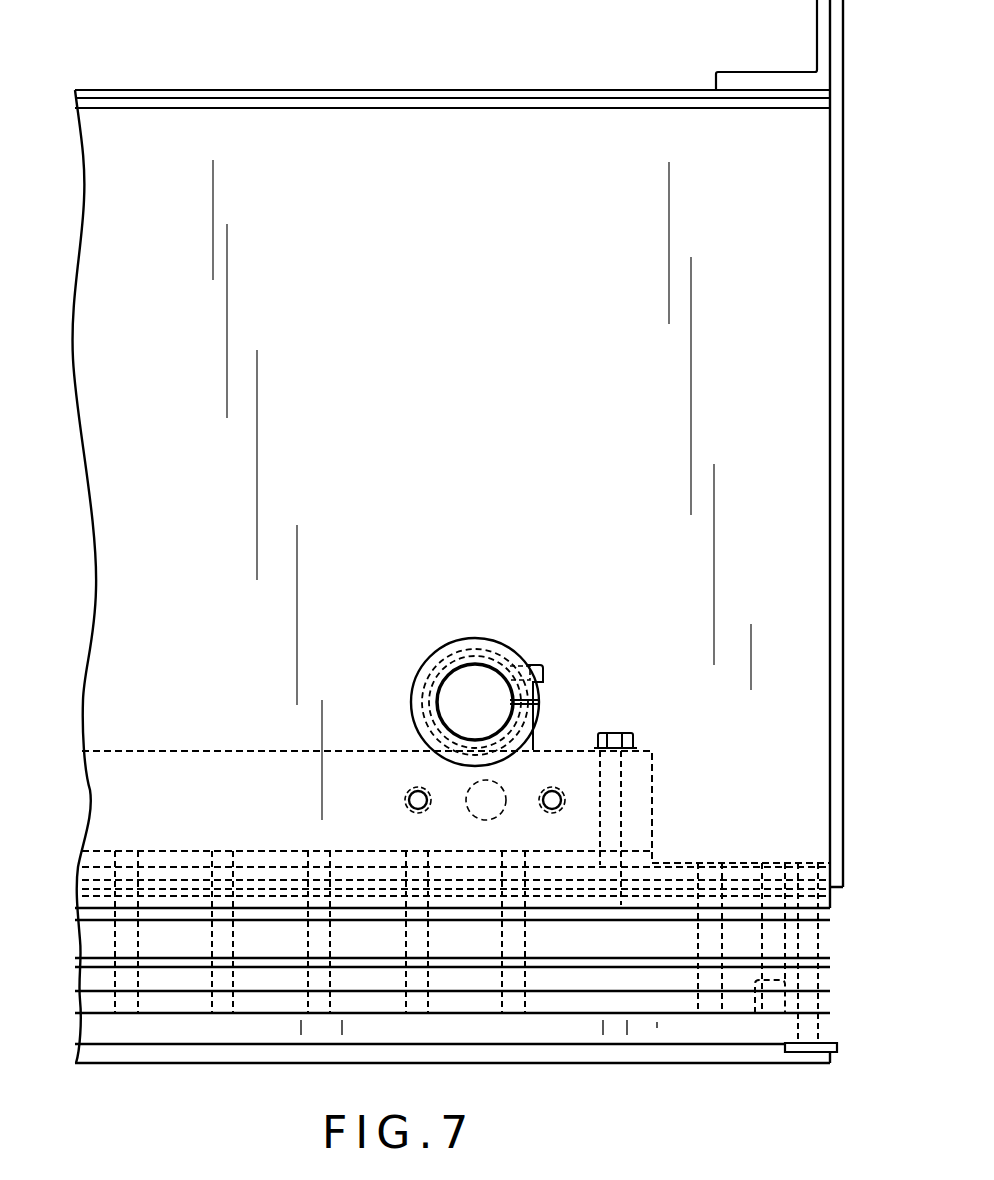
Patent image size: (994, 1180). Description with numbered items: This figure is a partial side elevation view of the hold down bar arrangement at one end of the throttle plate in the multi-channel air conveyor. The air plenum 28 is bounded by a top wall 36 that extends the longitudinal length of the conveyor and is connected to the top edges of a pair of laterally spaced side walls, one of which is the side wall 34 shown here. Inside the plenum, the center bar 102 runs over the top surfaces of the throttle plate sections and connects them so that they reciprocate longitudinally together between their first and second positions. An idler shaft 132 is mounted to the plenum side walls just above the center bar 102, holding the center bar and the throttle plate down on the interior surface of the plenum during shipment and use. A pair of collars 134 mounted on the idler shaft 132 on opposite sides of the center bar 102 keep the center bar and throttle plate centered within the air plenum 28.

The top wall 36 is at (282, 92).
The side wall 34 is at (808, 397).
The air plenum 28 is at (442, 273).
The collar 134 is at (450, 642).
The idler shaft 132 is at (488, 660).
The center bar 102 is at (229, 749).